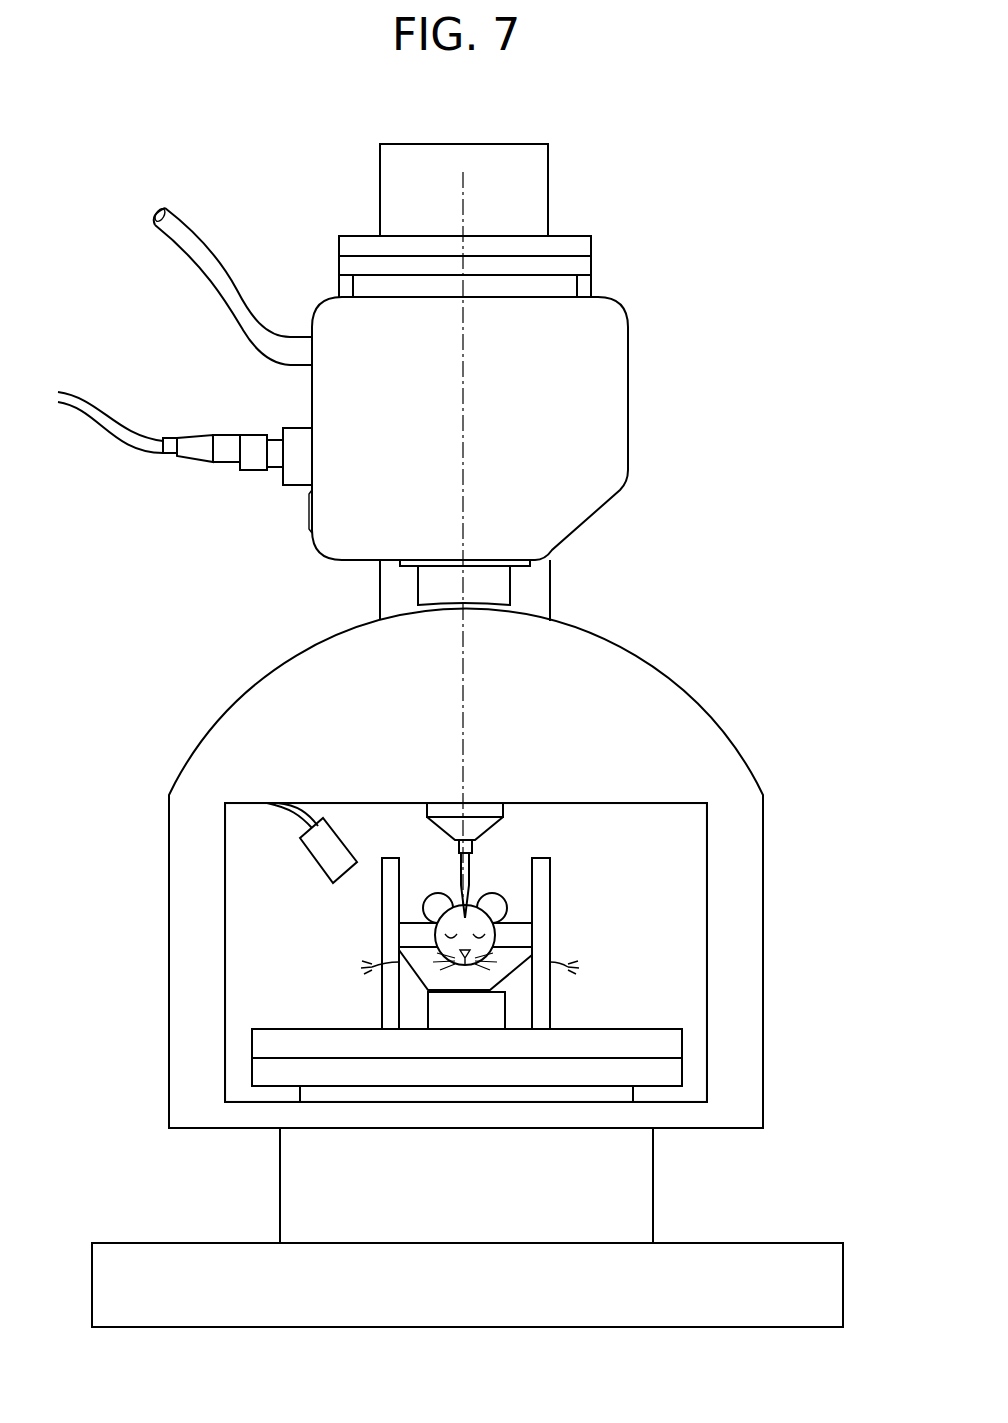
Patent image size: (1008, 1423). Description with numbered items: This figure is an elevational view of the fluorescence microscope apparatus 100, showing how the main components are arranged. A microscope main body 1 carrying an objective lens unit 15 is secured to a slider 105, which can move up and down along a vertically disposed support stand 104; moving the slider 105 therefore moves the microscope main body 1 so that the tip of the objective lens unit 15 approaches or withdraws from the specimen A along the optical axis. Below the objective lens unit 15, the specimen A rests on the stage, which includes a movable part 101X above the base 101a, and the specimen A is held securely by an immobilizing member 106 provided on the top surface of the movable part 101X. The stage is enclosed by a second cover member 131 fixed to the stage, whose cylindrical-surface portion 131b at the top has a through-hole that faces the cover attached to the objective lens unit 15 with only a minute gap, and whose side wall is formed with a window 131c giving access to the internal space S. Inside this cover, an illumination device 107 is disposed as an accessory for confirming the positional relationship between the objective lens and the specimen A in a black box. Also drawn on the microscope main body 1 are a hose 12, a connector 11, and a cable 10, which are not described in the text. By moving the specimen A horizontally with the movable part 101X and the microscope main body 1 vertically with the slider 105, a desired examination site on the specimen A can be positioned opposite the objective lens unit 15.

The fluorescence microscope apparatus 100 is at (745, 275).
The microscope main body 1 is at (300, 538).
The cable 10 is at (127, 433).
The connector 11 is at (205, 443).
The hose 12 is at (220, 271).
The support stand 104 is at (582, 283).
The slider 105 is at (550, 570).
The second cover member 131 is at (765, 848).
The cylindrical-surface portion 131b is at (607, 633).
The window 131c is at (622, 806).
The objective lens unit 15 is at (450, 826).
The immobilizing member 106 is at (550, 898).
The illumination device 107 is at (310, 858).
The movable part 101X is at (645, 1040).
The base 101a is at (803, 1243).
The specimen A is at (427, 972).
The internal space S is at (250, 947).